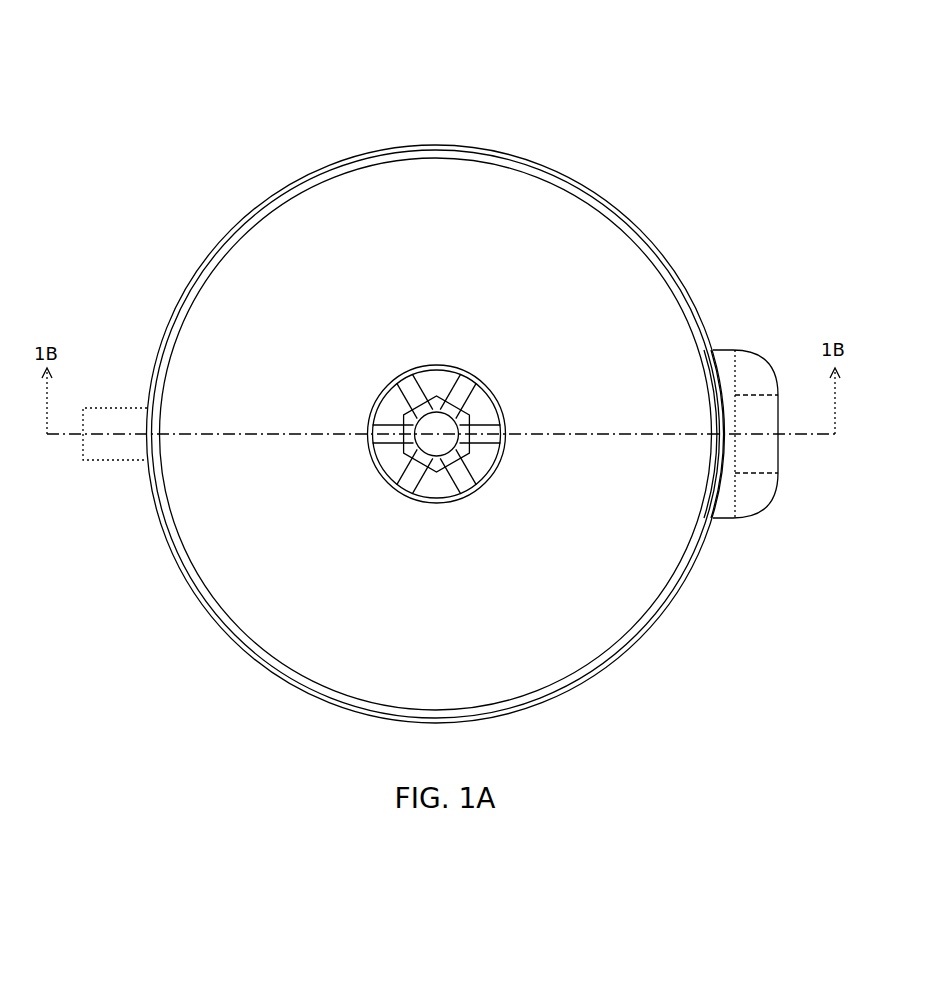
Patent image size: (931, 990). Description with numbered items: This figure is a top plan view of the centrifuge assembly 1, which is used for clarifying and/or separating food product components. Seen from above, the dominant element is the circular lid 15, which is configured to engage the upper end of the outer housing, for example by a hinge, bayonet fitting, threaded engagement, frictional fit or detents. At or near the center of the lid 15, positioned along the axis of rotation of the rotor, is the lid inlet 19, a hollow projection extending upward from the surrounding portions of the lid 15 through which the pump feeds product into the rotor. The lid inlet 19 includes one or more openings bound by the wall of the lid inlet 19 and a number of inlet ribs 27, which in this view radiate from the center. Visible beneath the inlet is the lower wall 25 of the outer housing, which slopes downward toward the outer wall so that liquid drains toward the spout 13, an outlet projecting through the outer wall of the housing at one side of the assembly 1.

The centrifuge assembly 1 is at (615, 103).
The spout 13 is at (109, 422).
The lid 15 is at (473, 212).
The lid inlet 19 is at (477, 368).
The lower wall 25 is at (397, 407).
The inlet ribs 27 is at (455, 478).